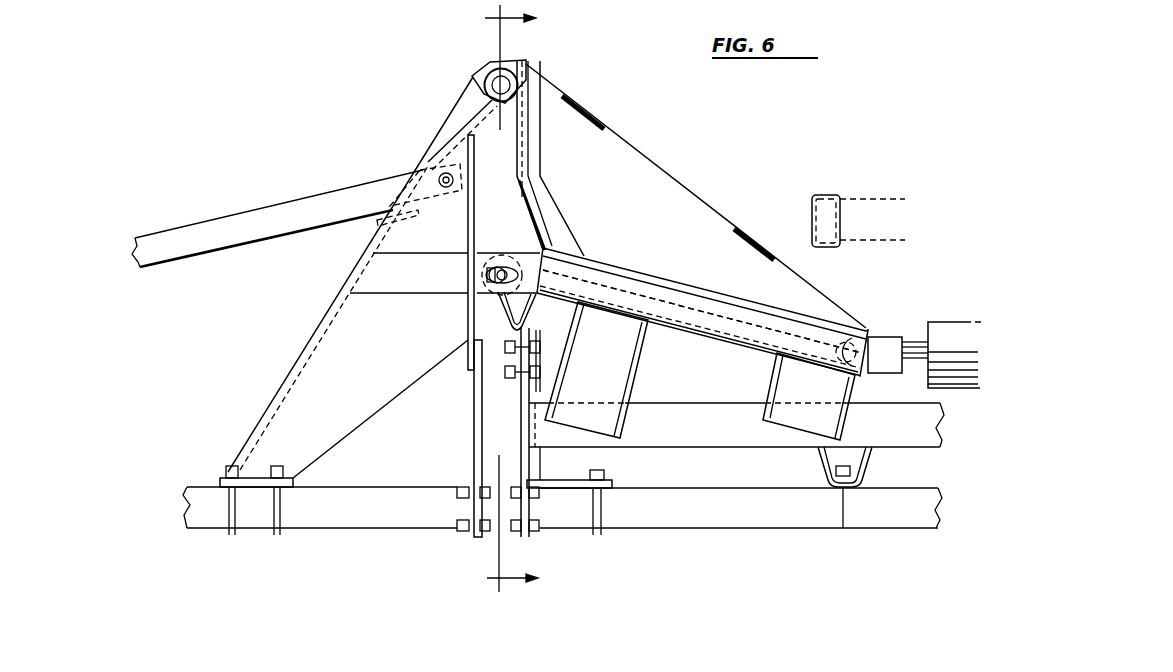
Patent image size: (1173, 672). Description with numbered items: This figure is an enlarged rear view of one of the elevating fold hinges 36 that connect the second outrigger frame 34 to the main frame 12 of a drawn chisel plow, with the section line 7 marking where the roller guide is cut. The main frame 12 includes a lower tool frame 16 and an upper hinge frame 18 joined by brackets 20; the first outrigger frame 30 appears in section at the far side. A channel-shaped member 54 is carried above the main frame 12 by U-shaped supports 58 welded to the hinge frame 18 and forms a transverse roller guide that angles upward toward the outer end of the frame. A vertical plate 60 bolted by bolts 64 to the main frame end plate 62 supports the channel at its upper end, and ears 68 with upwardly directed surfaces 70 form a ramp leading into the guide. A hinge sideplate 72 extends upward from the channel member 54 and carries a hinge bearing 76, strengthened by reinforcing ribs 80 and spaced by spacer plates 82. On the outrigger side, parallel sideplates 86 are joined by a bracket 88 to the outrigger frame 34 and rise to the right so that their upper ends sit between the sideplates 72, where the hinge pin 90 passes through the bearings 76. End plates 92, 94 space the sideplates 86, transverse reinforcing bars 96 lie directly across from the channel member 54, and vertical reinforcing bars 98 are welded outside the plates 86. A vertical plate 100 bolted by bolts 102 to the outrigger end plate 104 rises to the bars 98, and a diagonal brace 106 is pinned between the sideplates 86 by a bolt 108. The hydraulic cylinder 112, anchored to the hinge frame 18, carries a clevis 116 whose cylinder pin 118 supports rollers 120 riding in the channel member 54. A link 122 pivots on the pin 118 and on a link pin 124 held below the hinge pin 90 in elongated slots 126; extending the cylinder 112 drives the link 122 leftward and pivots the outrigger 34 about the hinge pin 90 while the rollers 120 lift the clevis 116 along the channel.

The section line 7- 7 is at (518, 298).
The main frame 12 is at (815, 540).
The tool frame 16 is at (700, 512).
The hinge frame 18 is at (702, 398).
The brackets 20 is at (872, 470).
The first outrigger frame 30 is at (867, 186).
The second outrigger frame 34 is at (372, 545).
The elevating fold hinges 36 is at (378, 92).
The channel-shaped member 54 is at (810, 310).
The U-shaped supports 58 is at (613, 364).
The vertical plate 60 is at (520, 442).
The main frame end plate 62 is at (600, 512).
The bolts 64 is at (516, 533).
The ears 68 is at (512, 310).
The upwardly directed surfaces 70 is at (522, 285).
The hinge sideplate 72 is at (645, 226).
The hinge bearings 76 is at (480, 70).
The reinforcing ribs 80 is at (540, 210).
The spacer plates 82 is at (585, 112).
The parallel sideplates 86 is at (345, 300).
The bracket 88 is at (215, 482).
The hinge pin 90 is at (512, 75).
The end plate 92 is at (387, 217).
The end plate 94 is at (465, 117).
The transverse reinforcing bars 96 is at (420, 286).
The vertical reinforcing bars 98 is at (467, 227).
The vertical plate 100 is at (470, 392).
The bolts 102 is at (468, 540).
The end plate 104 is at (462, 530).
The diagonal brace 106 is at (318, 200).
The bolt 108 is at (438, 178).
The hydraulic cylinder 112 is at (950, 330).
The clevis 116 is at (868, 372).
The cylinder pin 118 is at (772, 358).
The rollers 120 is at (862, 340).
The link 122 is at (700, 282).
The link pin 124 is at (502, 266).
The transversely elongated slots 126 is at (498, 290).